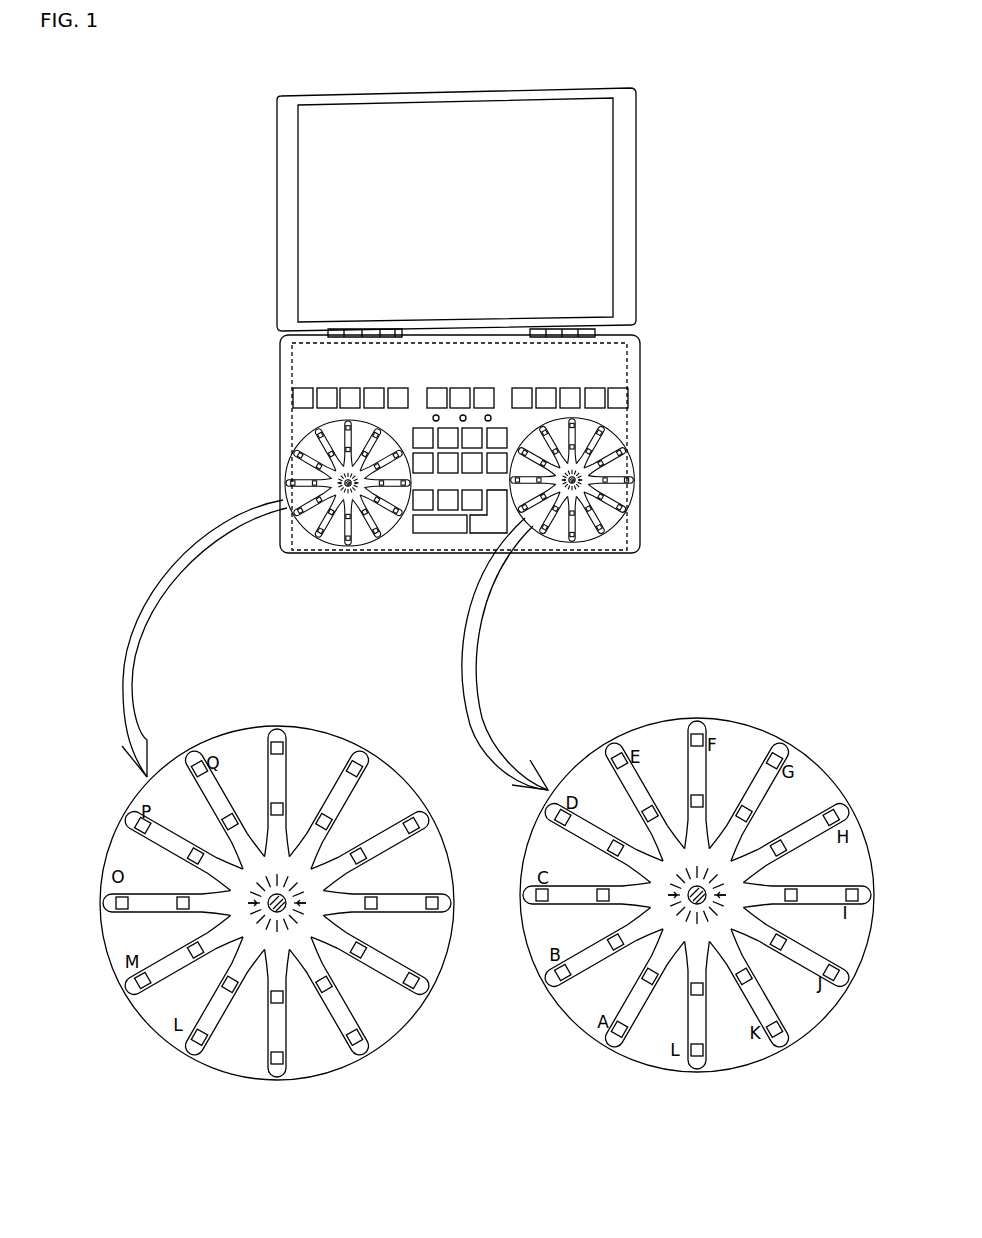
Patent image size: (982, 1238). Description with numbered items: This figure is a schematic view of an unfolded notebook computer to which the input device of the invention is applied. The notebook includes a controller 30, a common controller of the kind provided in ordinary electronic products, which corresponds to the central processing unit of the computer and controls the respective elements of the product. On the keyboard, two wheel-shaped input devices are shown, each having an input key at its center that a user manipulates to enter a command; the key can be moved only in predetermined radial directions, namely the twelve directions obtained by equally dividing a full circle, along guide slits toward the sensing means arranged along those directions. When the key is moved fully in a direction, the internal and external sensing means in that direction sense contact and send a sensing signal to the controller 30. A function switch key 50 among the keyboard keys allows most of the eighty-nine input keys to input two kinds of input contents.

The controller 30 is at (465, 320).
The function switch key 50 is at (457, 388).